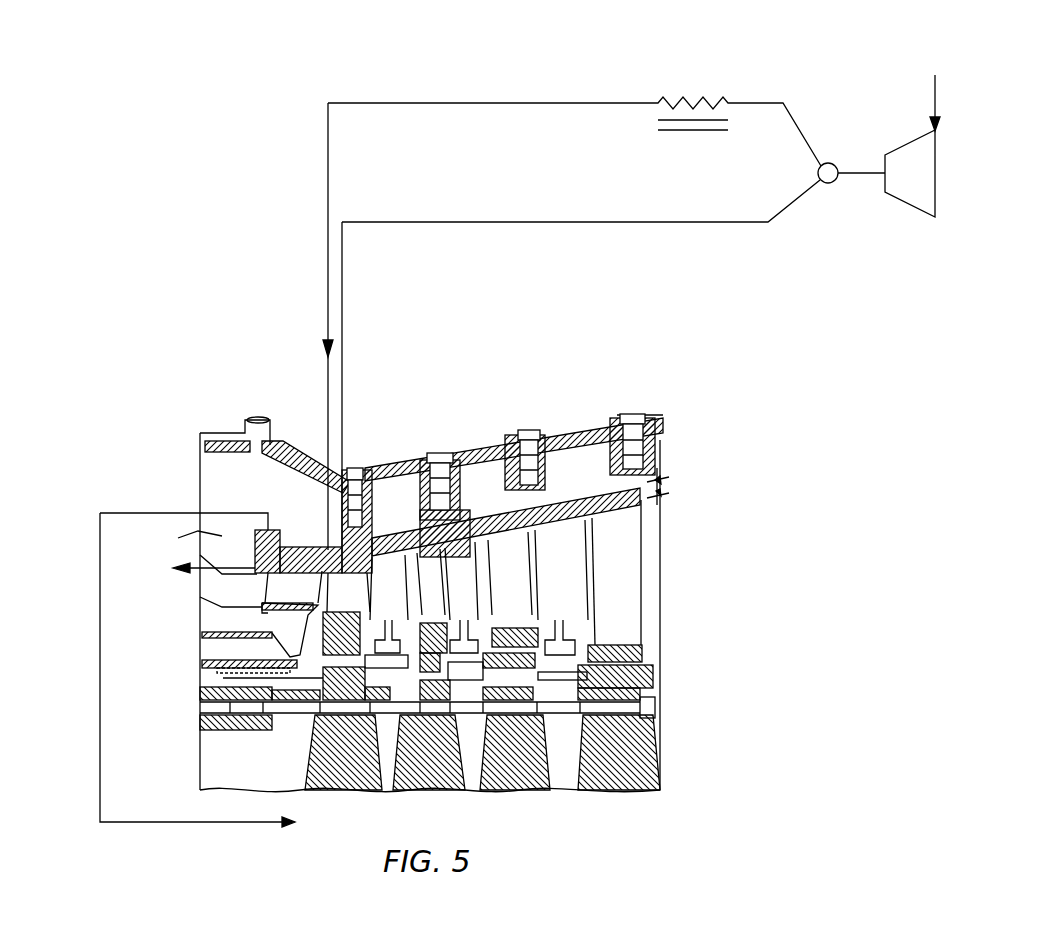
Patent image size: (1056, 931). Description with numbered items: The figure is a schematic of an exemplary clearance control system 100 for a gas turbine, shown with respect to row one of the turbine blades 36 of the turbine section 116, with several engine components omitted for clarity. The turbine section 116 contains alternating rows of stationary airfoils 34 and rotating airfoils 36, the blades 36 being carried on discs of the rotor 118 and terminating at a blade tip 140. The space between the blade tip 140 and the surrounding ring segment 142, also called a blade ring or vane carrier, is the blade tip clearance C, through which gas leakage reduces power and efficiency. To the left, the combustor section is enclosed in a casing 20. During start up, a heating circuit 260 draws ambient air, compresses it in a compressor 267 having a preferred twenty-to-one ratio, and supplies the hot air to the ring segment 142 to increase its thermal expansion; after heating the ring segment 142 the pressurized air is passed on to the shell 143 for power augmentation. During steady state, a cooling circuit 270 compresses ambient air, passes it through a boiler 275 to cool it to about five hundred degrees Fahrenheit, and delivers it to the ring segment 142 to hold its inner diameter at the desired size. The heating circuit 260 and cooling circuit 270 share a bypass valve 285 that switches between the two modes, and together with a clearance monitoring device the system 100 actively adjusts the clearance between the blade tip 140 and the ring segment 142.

The casing 20 is at (318, 555).
The stationary airfoils 34 is at (311, 604).
The rotating airfoils 36 is at (357, 604).
The clearance control system 100 is at (796, 316).
The turbine section 116 is at (549, 390).
The rotor 118 is at (306, 773).
The blade tip 140 is at (420, 548).
The ring segment 142 is at (313, 565).
The shell 143 is at (127, 480).
The heating circuit 260 is at (560, 222).
The compressor 267 is at (935, 195).
The cooling circuit 270 is at (576, 103).
The boiler 275 is at (712, 90).
The bypass valve 285 is at (830, 183).
The blade tip clearance C is at (668, 486).